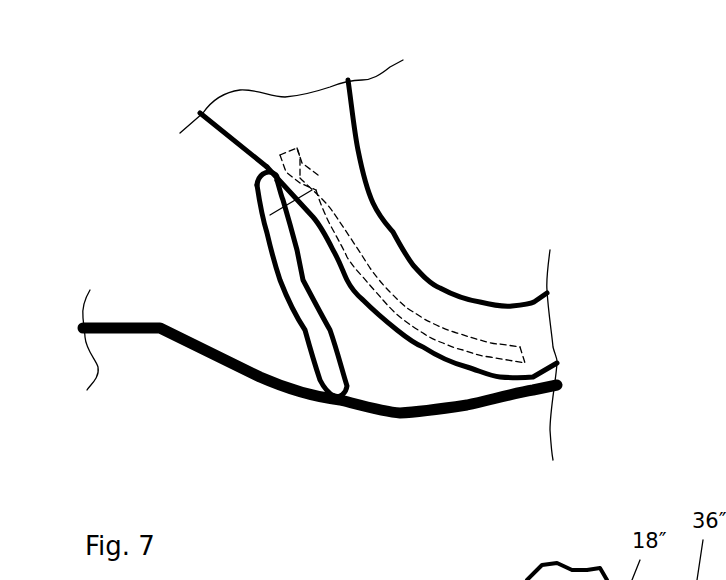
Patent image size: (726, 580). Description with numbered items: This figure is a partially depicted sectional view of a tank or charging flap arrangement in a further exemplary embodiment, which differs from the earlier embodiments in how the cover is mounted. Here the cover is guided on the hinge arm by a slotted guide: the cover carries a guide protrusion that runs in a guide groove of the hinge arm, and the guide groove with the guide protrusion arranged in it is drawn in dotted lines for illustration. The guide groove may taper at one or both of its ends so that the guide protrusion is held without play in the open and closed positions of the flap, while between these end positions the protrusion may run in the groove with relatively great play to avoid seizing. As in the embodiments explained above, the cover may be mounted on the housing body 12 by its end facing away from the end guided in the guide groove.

The housing body 12 is at (248, 357).